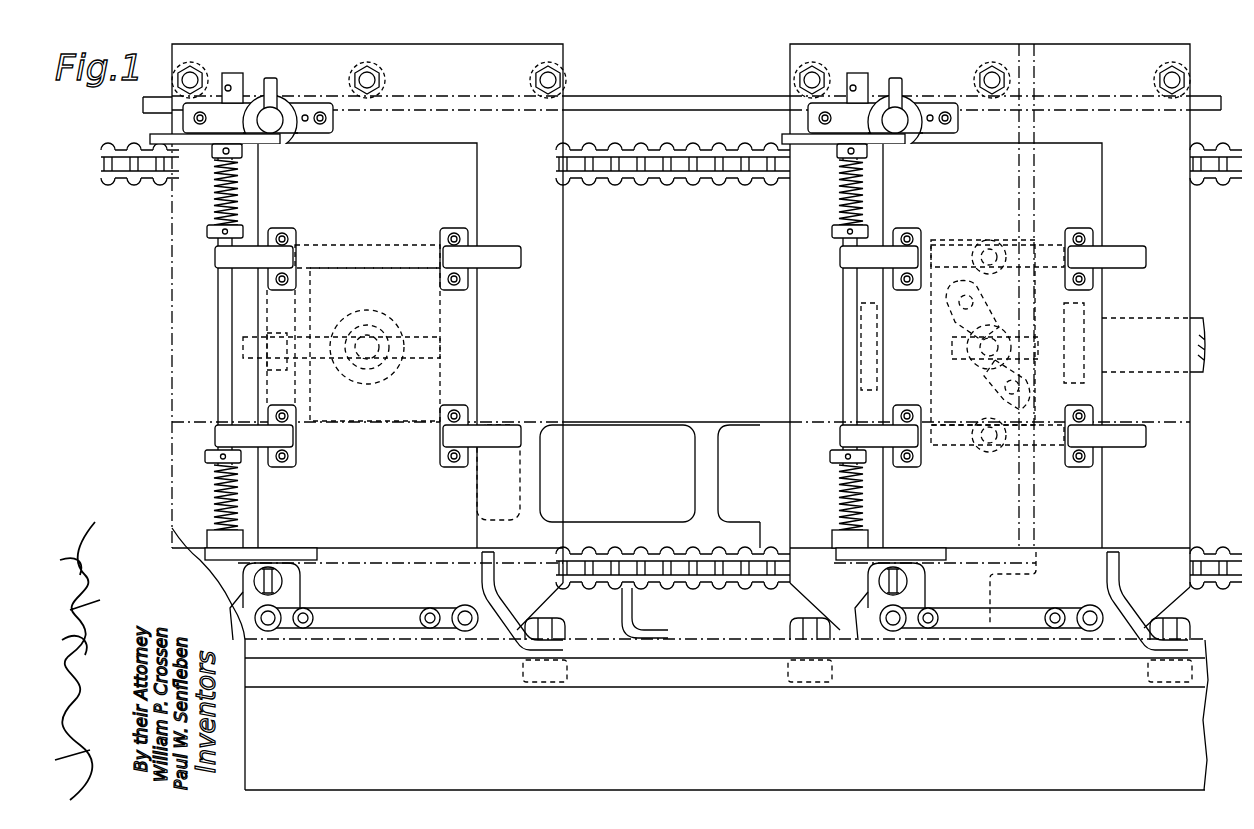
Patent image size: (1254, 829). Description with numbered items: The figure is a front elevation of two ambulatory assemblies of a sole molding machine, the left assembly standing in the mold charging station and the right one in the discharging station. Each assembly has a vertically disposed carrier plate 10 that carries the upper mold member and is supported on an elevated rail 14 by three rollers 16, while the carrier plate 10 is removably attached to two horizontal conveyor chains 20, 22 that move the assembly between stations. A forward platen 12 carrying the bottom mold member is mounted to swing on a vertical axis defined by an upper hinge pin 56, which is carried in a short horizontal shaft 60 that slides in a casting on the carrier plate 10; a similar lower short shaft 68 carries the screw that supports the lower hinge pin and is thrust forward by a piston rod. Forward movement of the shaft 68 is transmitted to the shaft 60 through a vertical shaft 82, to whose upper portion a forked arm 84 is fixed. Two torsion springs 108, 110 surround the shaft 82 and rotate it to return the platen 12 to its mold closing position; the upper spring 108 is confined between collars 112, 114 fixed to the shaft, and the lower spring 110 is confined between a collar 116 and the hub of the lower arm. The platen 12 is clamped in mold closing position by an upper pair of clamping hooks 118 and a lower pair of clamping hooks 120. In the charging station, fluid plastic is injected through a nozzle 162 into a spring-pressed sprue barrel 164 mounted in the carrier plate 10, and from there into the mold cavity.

The carrier plate 10 is at (556, 240).
The platen 12 is at (472, 180).
The elevated rail 14 is at (678, 100).
The rollers 16 is at (175, 80).
The horizontal chain 20 is at (674, 185).
The horizontal chain 22 is at (703, 589).
The upper hinge pin 56 is at (270, 97).
The short horizontal shaft 60 is at (277, 117).
The short shaft 68 is at (281, 582).
The vertical shaft 82 is at (216, 313).
The forked arm 84 is at (246, 92).
The torsion spring 108 is at (240, 191).
The torsion spring 110 is at (214, 483).
The collar 112 is at (869, 152).
The collar 114 is at (832, 233).
The collar 116 is at (832, 455).
The upper clamping hooks 118 is at (284, 256).
The lower clamping hooks 120 is at (284, 445).
The nozzle 162 is at (371, 363).
The sprue barrel 164 is at (984, 364).